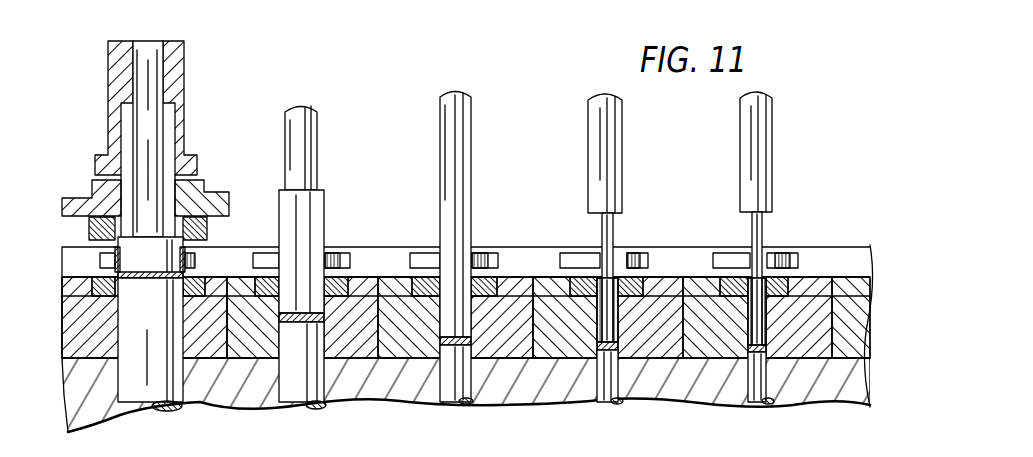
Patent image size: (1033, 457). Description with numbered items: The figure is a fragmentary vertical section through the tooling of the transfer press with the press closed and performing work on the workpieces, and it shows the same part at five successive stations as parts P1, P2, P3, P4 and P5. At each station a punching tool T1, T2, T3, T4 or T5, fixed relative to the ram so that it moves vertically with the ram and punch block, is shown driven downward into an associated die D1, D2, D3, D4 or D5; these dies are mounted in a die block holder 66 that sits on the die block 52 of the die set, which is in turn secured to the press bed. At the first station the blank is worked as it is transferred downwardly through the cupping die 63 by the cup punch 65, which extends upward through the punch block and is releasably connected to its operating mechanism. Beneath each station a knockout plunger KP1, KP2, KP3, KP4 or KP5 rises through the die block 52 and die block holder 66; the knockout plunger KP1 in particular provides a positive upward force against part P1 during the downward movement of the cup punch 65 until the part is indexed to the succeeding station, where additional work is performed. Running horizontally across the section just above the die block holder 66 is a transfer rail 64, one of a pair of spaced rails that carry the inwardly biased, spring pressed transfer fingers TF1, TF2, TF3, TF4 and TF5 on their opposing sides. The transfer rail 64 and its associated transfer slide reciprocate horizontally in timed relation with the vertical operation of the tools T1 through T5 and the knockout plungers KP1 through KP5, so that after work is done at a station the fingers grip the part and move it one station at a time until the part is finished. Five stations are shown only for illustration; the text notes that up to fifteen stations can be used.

The punching tool T1 is at (185, 60).
The punching tool T2 is at (324, 190).
The punching tool T3 is at (471, 183).
The punching tool T4 is at (622, 167).
The punching tool T5 is at (773, 160).
The die D1 is at (79, 193).
The die D2 is at (364, 292).
The die D3 is at (514, 292).
The die D4 is at (660, 290).
The die D5 is at (812, 292).
The transfer finger TF1 is at (196, 252).
The transfer finger TF2 is at (340, 253).
The transfer finger TF3 is at (485, 252).
The transfer finger TF4 is at (633, 253).
The transfer finger TF5 is at (776, 252).
The part P1 is at (100, 270).
The part P2 is at (258, 276).
The part P3 is at (413, 274).
The part P4 is at (598, 276).
The part P5 is at (747, 312).
The knockout plunger KP1 is at (164, 392).
The knockout plunger KP2 is at (300, 390).
The knockout plunger KP3 is at (455, 388).
The knockout plunger KP4 is at (608, 388).
The knockout plunger KP5 is at (760, 388).
The die block 52 is at (858, 384).
The cupping die 63 is at (88, 229).
The transfer rail 64 is at (861, 262).
The cup punch 65 is at (158, 270).
The die block holder 66 is at (856, 312).